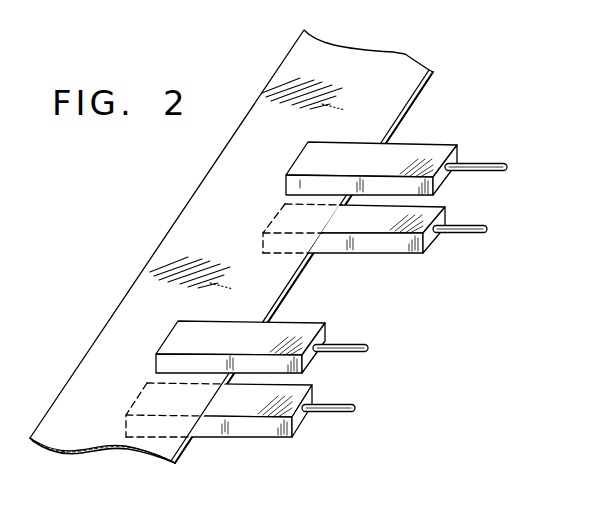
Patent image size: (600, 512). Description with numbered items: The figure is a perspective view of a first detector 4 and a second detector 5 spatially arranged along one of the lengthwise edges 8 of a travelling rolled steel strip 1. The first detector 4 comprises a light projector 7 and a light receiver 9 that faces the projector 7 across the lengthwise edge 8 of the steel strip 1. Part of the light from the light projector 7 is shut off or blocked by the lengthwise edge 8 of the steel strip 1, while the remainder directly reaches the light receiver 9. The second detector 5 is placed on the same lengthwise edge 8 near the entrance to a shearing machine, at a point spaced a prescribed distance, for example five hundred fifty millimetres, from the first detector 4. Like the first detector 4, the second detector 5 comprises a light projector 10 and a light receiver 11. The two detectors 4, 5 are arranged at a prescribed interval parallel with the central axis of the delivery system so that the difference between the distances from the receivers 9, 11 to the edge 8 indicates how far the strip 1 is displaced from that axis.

The rolled steel strip 1 is at (391, 67).
The lengthwise edge 8 is at (425, 88).
The first detector 4 is at (348, 167).
The light receiver 9 is at (440, 148).
The light projector 7 is at (378, 248).
The second detector 5 is at (230, 345).
The light receiver 11 is at (300, 325).
The light projector 10 is at (237, 427).